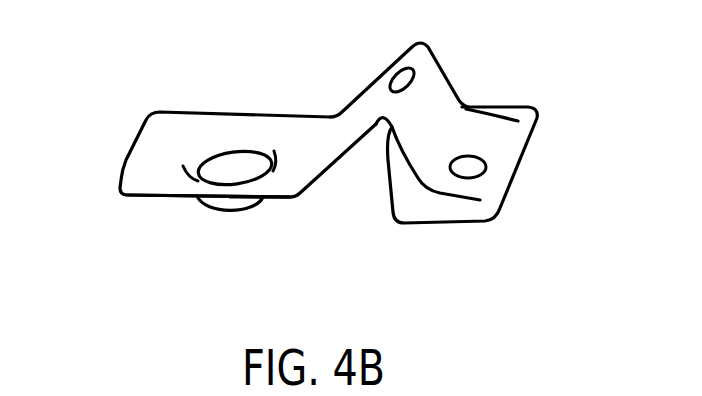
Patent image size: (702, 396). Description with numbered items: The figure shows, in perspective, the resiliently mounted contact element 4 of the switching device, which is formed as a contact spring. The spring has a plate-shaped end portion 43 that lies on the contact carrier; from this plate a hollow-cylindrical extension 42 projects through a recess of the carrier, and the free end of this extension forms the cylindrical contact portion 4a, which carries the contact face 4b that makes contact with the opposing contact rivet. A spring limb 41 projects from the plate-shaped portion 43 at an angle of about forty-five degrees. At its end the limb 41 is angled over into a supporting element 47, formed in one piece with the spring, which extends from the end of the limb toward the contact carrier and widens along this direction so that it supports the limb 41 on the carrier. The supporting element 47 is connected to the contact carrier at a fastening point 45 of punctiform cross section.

The contact element 4 is at (190, 224).
The contact portion 4a is at (258, 205).
The contact face 4b is at (227, 213).
The spring limb 41 is at (370, 83).
The hollow-cylindrical extension 42 is at (227, 162).
The plate-shaped end portion 43 is at (132, 161).
The fastening point 45 is at (480, 167).
The supporting element 47 is at (413, 158).